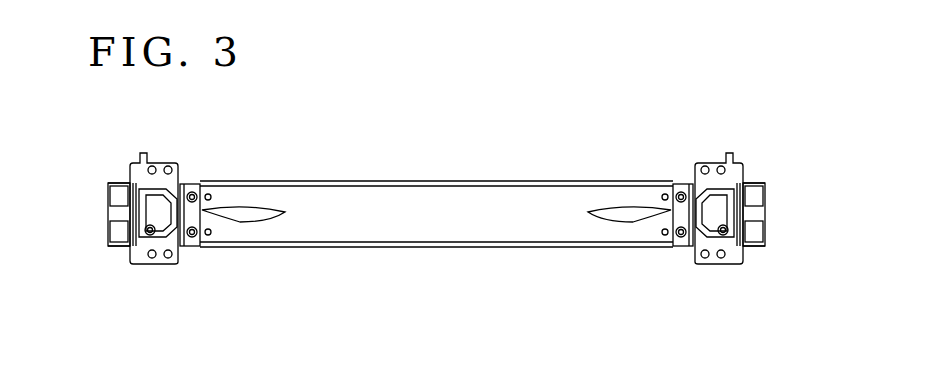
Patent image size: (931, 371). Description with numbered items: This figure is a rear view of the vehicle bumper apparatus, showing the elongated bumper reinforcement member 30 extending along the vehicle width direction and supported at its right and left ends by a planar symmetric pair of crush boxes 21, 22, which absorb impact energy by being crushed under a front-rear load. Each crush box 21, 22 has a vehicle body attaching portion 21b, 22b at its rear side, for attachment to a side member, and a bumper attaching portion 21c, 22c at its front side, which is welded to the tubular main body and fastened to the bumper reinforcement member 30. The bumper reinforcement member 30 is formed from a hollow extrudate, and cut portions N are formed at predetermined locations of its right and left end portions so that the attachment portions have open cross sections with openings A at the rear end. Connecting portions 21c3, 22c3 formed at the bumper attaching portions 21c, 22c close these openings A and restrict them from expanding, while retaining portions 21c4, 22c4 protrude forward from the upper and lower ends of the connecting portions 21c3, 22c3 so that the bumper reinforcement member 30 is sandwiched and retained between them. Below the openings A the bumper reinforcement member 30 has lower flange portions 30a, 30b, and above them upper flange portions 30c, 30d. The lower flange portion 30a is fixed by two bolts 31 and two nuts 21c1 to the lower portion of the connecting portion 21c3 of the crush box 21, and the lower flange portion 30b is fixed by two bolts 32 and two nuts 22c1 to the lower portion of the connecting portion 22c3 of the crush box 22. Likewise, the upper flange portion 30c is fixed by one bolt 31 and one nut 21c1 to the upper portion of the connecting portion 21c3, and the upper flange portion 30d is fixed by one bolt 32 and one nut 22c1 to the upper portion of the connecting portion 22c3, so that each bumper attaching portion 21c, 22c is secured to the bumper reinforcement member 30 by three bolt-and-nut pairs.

The bumper reinforcement member 30 is at (437, 181).
The lower flange portion 30a is at (765, 234).
The lower flange portion 30b is at (110, 234).
The upper flange portion 30c is at (765, 197).
The upper flange portion 30d is at (110, 197).
The crush box 21 is at (742, 166).
The vehicle body attaching portion 21b is at (706, 262).
The bumper attaching portion 21c is at (678, 210).
The nut 21c1 is at (682, 193).
The connecting portion 21c3 is at (760, 216).
The retaining portion 21c4 is at (745, 185).
The crush box 22 is at (130, 172).
The vehicle body attaching portion 22b is at (168, 258).
The bumper attaching portion 22c is at (195, 210).
The nut 22c1 is at (192, 192).
The connecting portion 22c3 is at (112, 216).
The retaining portion 22c4 is at (112, 186).
The bolt 31 is at (672, 184).
The bolt 32 is at (198, 194).
The opening A is at (210, 225).
The cut portion N is at (474, 225).